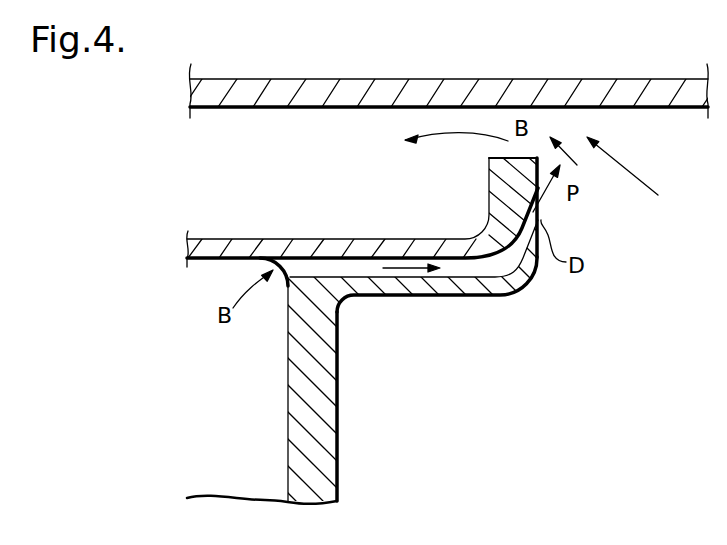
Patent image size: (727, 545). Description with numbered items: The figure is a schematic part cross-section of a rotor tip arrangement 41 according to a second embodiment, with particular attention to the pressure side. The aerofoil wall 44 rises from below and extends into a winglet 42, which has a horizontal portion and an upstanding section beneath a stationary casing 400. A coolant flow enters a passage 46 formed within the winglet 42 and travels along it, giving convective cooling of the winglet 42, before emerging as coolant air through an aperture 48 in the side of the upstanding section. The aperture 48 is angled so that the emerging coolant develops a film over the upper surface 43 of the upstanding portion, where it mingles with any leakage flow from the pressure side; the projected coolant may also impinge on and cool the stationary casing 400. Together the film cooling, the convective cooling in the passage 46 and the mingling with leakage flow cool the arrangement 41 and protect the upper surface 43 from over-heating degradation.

The stationary casing 400 is at (563, 70).
The rotor tip arrangement 41 is at (340, 438).
The winglet 42 is at (421, 297).
The upper surface 43 is at (524, 157).
The aerofoil wall 44 is at (296, 480).
The passage 46 is at (328, 266).
The aperture 48 is at (541, 217).